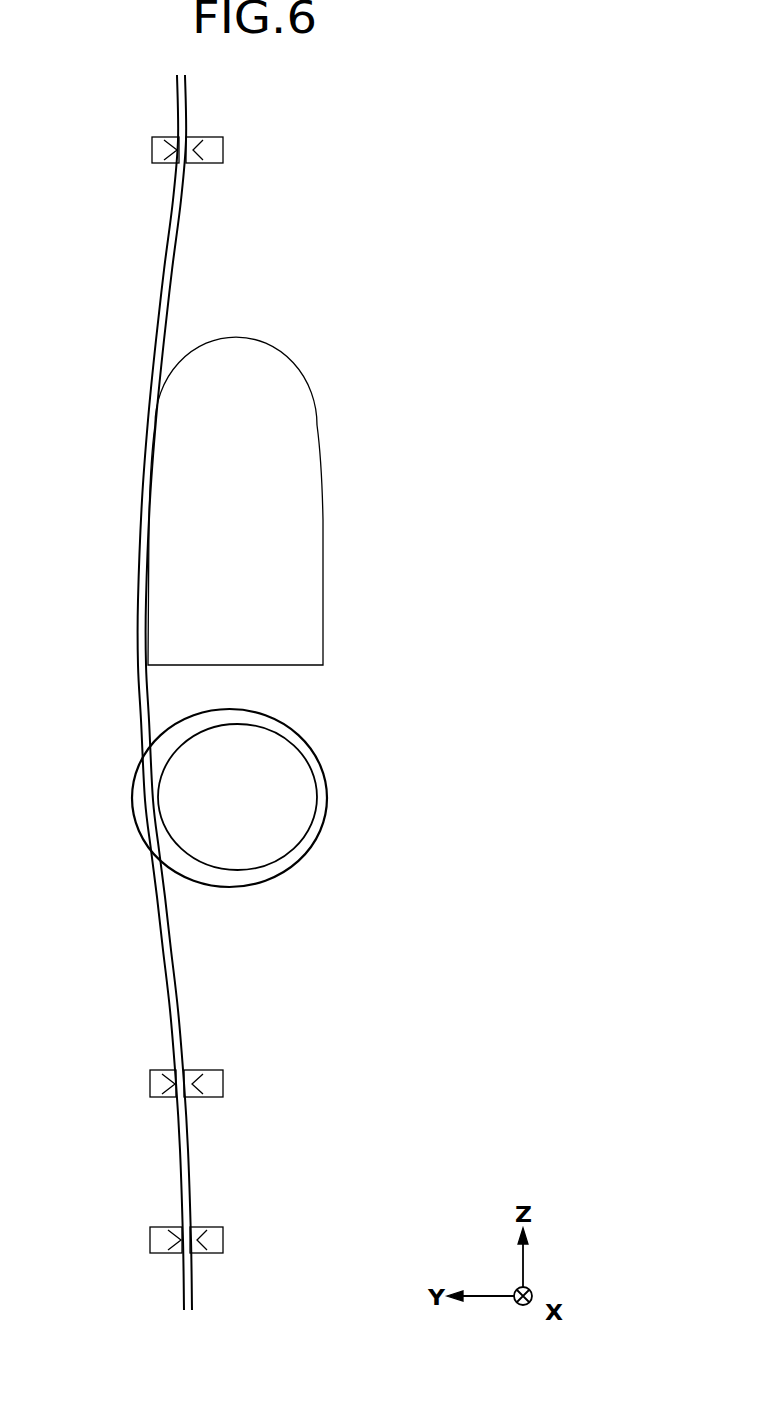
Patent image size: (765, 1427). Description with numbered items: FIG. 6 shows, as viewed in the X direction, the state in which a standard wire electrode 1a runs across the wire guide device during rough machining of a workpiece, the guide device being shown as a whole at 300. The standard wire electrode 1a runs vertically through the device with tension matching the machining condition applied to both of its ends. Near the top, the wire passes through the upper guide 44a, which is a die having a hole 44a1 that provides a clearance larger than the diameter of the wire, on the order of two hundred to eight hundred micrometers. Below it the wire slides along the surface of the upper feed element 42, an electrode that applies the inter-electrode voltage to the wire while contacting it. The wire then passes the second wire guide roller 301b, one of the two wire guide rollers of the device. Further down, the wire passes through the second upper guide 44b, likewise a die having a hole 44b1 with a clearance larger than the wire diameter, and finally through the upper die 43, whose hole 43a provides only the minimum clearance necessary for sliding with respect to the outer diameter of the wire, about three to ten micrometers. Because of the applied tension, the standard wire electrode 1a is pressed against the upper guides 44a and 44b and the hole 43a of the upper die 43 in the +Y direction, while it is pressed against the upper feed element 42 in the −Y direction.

The standard wire electrode 1a is at (177, 247).
The upper feed element 42 is at (312, 540).
The upper die 43 is at (184, 1240).
The hole 43a is at (160, 1240).
The upper guide 44a is at (180, 151).
The hole 44a1 is at (160, 150).
The upper guide 44b is at (184, 1083).
The hole 44b1 is at (160, 1084).
The processing unit 300 is at (308, 612).
The second wire guide roller 301b is at (310, 822).